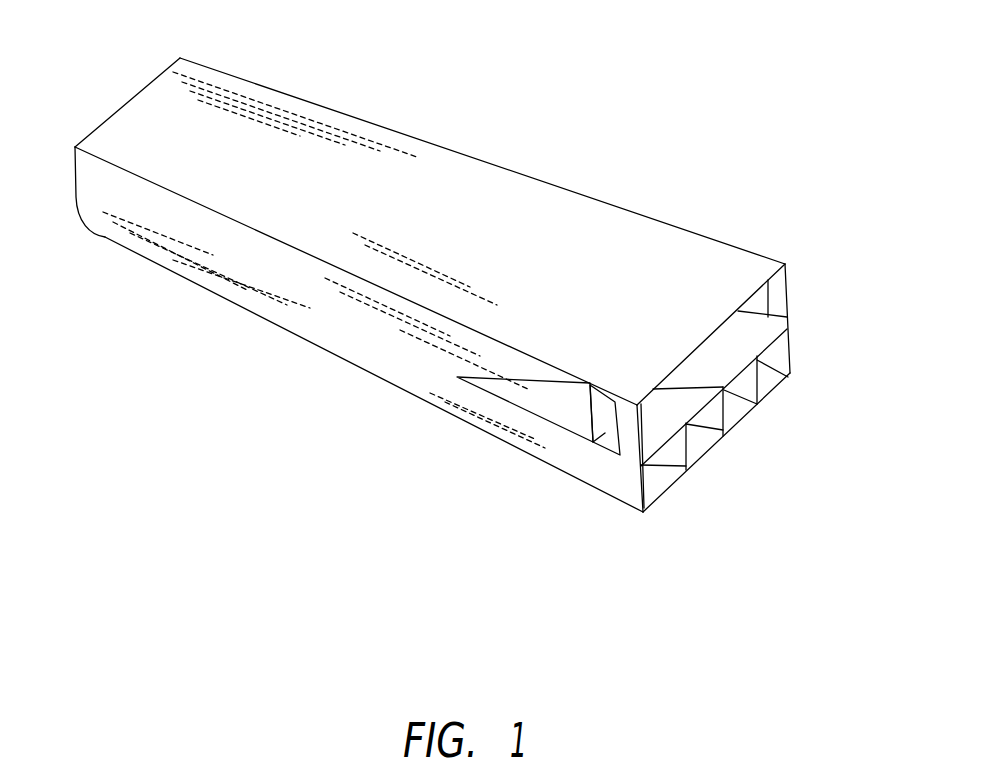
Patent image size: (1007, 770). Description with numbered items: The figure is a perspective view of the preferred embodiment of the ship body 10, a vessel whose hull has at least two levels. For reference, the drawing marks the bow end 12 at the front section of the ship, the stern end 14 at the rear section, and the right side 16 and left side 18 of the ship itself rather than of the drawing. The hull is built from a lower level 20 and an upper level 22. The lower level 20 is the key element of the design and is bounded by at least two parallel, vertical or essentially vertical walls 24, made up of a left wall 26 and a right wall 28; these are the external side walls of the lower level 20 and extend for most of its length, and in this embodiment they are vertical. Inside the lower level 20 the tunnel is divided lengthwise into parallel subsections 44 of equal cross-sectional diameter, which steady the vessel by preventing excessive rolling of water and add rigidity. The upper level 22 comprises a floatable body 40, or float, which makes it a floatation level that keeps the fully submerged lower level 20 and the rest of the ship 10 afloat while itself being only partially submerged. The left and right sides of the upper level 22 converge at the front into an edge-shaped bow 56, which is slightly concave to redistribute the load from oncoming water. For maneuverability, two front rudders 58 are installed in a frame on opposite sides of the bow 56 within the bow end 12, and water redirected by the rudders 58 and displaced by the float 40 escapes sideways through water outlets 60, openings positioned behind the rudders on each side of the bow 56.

The ship body 10 is at (340, 66).
The bow end 12 is at (780, 462).
The stern end 14 is at (104, 86).
The right side 16 is at (176, 332).
The left side 18 is at (524, 128).
The lower level 20 is at (810, 363).
The upper level 22 is at (805, 303).
The walls 24 is at (790, 348).
The left wall 26 is at (792, 378).
The right wall 28 is at (637, 480).
The floatable body 40 is at (480, 350).
The subsections 44 is at (703, 447).
The edge-shaped bow 56 is at (723, 388).
The front rudders 58 is at (605, 433).
The water outlets 60 is at (555, 405).